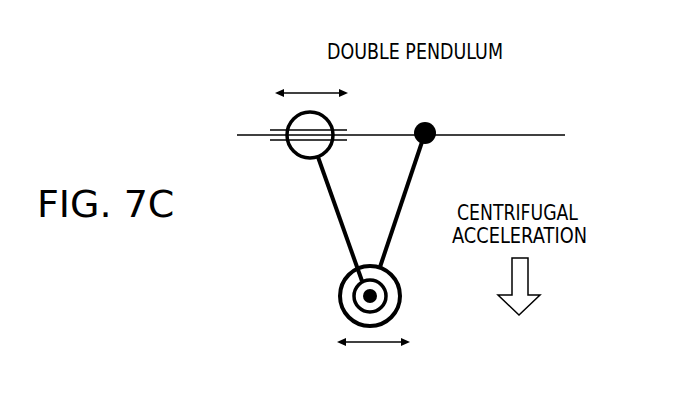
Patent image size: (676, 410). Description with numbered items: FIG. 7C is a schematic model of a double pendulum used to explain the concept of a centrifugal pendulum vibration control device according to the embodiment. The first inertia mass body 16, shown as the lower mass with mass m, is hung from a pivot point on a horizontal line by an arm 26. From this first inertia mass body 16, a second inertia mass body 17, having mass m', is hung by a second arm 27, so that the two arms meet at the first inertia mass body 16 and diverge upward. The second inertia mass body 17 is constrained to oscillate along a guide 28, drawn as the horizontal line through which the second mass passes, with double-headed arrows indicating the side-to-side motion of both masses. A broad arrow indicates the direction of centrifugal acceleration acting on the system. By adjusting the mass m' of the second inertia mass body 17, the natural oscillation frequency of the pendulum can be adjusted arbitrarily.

The first inertia mass body 16 is at (338, 292).
The second inertia mass body 17 is at (289, 118).
The arm 26 is at (400, 220).
The arm 27 is at (327, 198).
The guide 28 is at (370, 133).